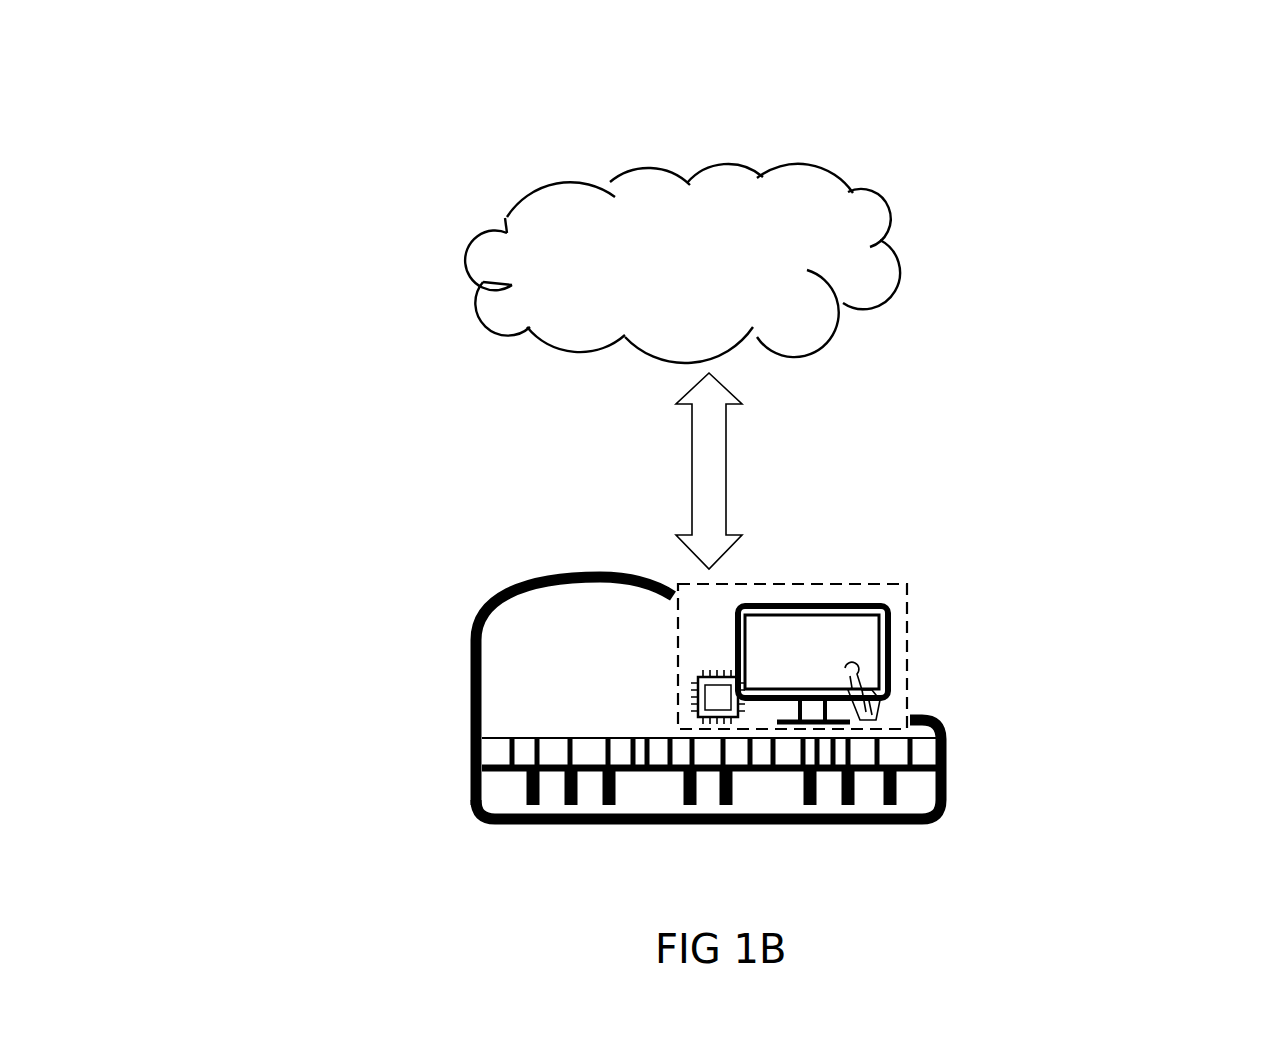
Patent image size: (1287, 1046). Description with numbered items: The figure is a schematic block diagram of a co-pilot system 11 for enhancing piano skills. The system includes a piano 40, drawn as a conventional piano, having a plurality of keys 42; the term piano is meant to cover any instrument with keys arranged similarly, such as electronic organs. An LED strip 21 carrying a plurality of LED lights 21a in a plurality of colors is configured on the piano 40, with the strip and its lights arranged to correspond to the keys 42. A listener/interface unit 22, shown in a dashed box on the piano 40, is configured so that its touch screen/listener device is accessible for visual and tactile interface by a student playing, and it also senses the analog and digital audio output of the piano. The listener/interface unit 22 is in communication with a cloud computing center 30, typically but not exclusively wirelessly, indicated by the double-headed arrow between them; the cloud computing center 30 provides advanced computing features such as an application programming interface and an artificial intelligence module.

The co-pilot system 11 is at (1229, 72).
The LED strip 21 is at (558, 686).
The LED lights 21a is at (527, 794).
The listener/interface unit 22 is at (934, 622).
The cloud computing center 30 is at (606, 239).
The piano 40 is at (650, 632).
The keys 42 is at (901, 828).